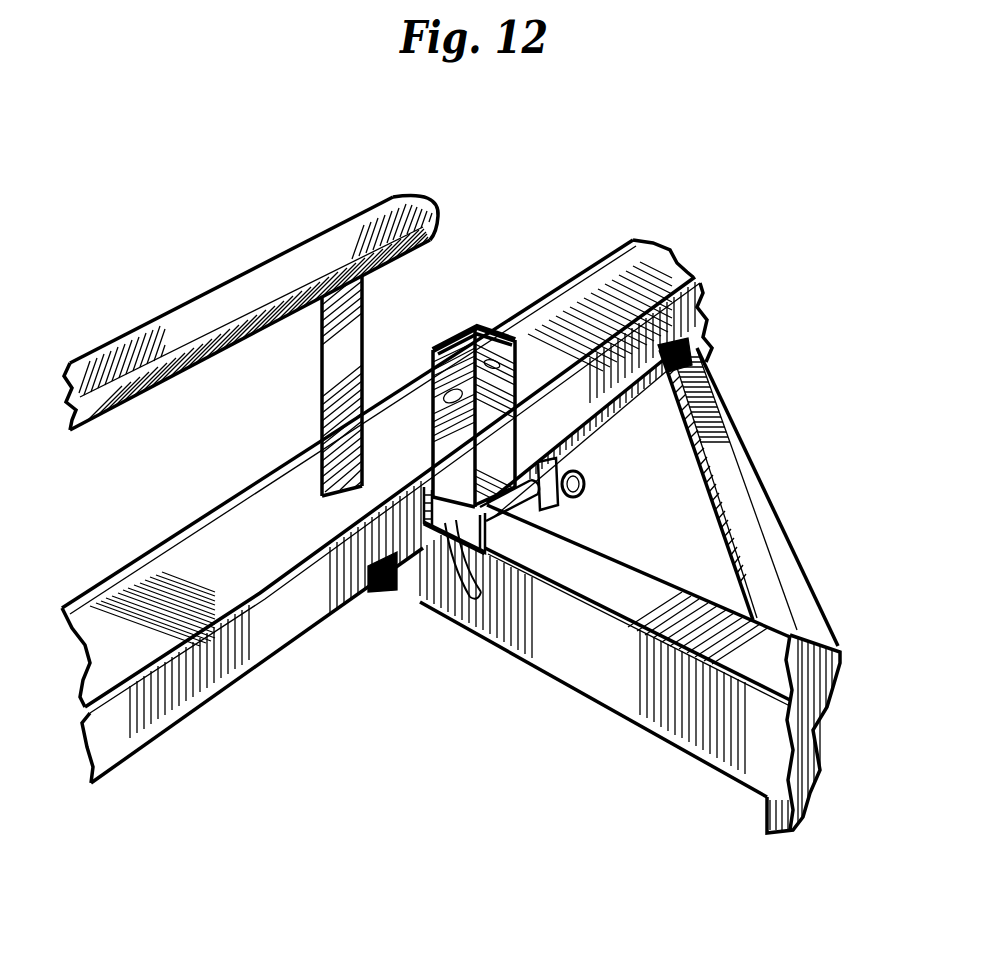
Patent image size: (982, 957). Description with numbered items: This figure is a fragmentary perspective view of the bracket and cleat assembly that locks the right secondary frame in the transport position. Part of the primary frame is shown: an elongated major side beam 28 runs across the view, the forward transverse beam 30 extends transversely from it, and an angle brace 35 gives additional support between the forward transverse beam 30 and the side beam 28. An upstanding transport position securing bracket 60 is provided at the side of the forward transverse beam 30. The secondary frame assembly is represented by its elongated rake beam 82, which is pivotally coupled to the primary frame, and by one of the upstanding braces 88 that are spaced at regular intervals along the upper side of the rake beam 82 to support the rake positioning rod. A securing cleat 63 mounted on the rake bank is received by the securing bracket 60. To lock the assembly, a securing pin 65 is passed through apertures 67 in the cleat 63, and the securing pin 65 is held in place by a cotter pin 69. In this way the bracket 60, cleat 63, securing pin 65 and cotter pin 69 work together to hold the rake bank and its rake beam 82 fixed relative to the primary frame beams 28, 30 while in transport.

The major side beam 28 is at (703, 330).
The forward transverse beam 30 is at (644, 706).
The angle brace 35 is at (763, 521).
The transport position securing bracket 60 is at (473, 328).
The securing cleat 63 is at (424, 526).
The securing pin 65 is at (462, 598).
The aperture 67 is at (552, 505).
The cotter pin 69 is at (586, 484).
The rake beam 82 is at (172, 710).
The upstanding brace 88 is at (340, 378).